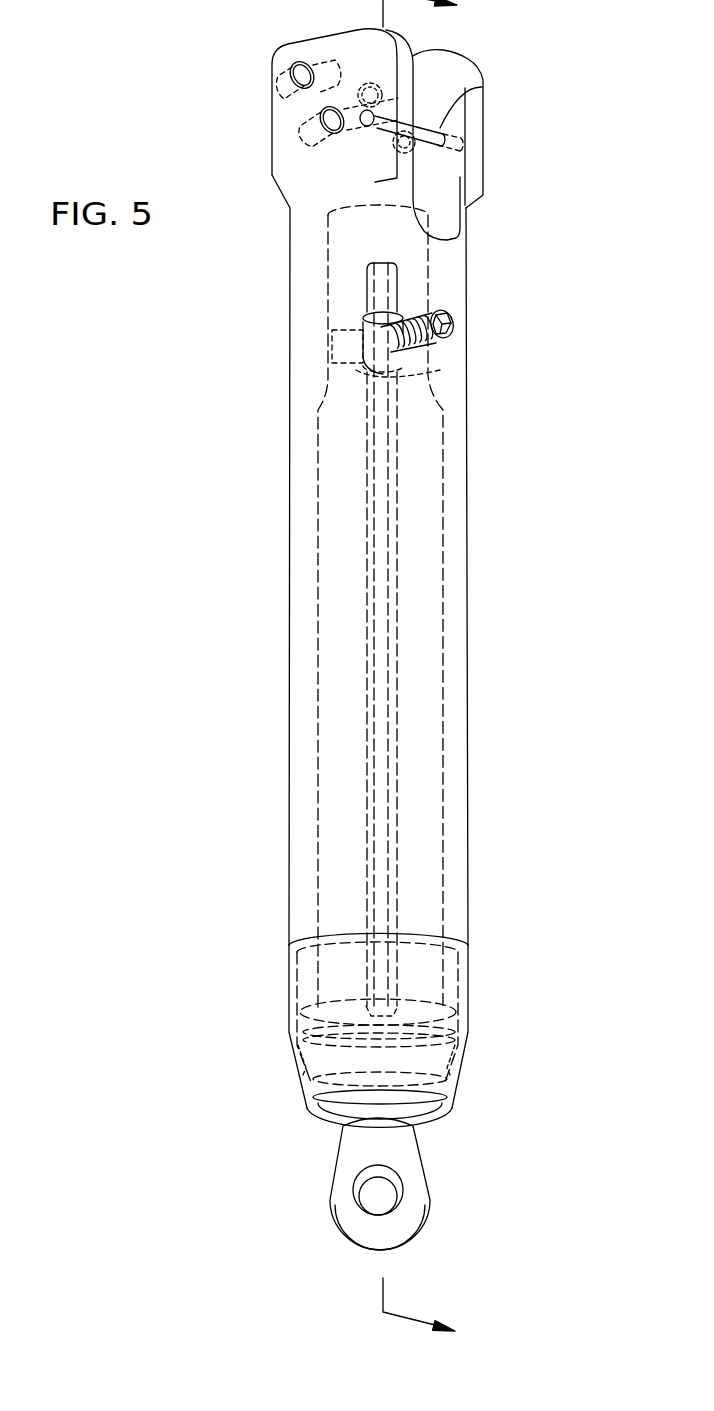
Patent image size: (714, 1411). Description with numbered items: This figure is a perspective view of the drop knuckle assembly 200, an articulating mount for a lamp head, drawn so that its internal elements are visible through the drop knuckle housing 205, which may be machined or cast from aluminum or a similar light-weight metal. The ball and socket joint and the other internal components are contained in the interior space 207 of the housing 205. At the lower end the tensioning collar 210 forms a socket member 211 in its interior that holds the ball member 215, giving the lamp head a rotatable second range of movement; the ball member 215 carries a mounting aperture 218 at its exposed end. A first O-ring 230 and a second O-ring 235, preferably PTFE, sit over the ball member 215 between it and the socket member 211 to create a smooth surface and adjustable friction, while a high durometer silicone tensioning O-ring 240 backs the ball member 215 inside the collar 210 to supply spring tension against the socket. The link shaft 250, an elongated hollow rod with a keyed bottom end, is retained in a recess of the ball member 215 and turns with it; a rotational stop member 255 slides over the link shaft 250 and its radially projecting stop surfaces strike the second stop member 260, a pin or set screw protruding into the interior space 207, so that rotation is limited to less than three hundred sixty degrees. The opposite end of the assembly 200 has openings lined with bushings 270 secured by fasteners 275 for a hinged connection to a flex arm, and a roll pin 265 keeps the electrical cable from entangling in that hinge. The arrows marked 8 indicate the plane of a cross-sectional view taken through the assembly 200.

The section line 8- 8 is at (425, 671).
The drop knuckle assembly 200 is at (521, 551).
The drop knuckle housing 205 is at (468, 764).
The interior space 207 is at (422, 489).
The tensioning collar 210 is at (289, 1000).
The socket member 211 is at (292, 1058).
The ball member 215 is at (312, 1121).
The mounting aperture 218 is at (345, 1188).
The first O-ring 230 is at (450, 1095).
The second O-ring 235 is at (450, 1045).
The tensioning O-ring 240 is at (453, 1023).
The link shaft 250 is at (397, 820).
The rotational stop member 255 is at (333, 350).
The second stop member 260 is at (453, 318).
The roll pin 265 is at (482, 87).
The bushings 270 is at (293, 64).
The fasteners 275 is at (282, 90).